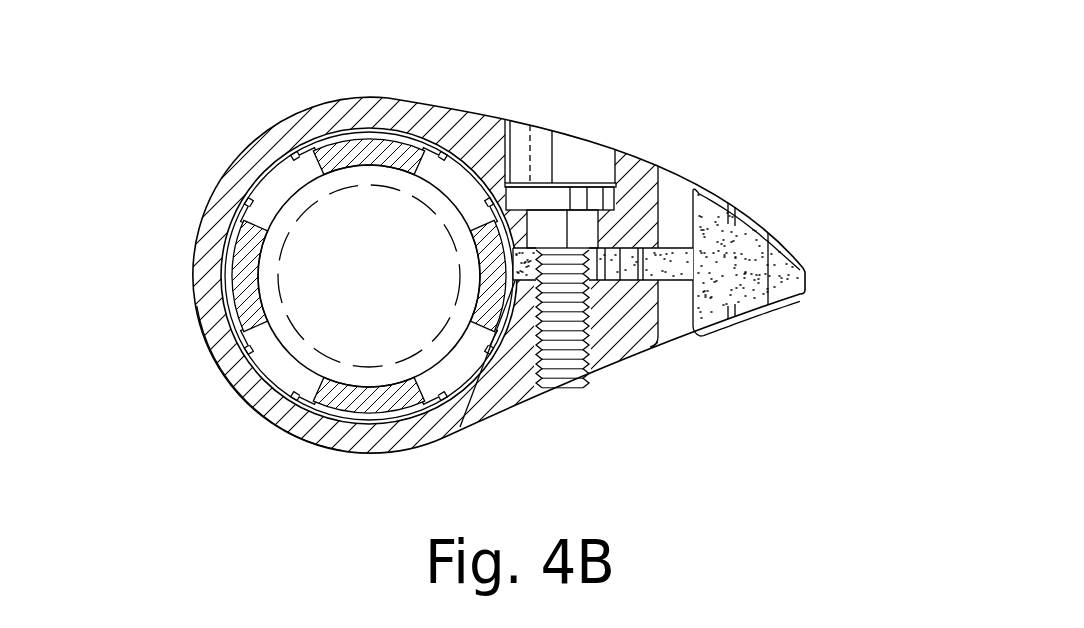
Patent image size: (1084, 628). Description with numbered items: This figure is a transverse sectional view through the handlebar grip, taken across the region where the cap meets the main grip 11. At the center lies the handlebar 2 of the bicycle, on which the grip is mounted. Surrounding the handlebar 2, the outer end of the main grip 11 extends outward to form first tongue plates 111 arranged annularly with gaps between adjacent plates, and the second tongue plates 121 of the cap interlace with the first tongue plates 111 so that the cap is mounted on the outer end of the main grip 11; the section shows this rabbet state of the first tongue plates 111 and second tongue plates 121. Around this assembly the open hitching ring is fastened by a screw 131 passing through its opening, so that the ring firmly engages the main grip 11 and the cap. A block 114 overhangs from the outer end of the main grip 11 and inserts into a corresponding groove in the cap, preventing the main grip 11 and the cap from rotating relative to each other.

The handlebar 2 is at (335, 178).
The main grip 11 is at (470, 140).
The first tongue plates 111 is at (237, 280).
The block 114 is at (618, 267).
The second tongue plates 121 is at (248, 400).
The screw 131 is at (563, 343).